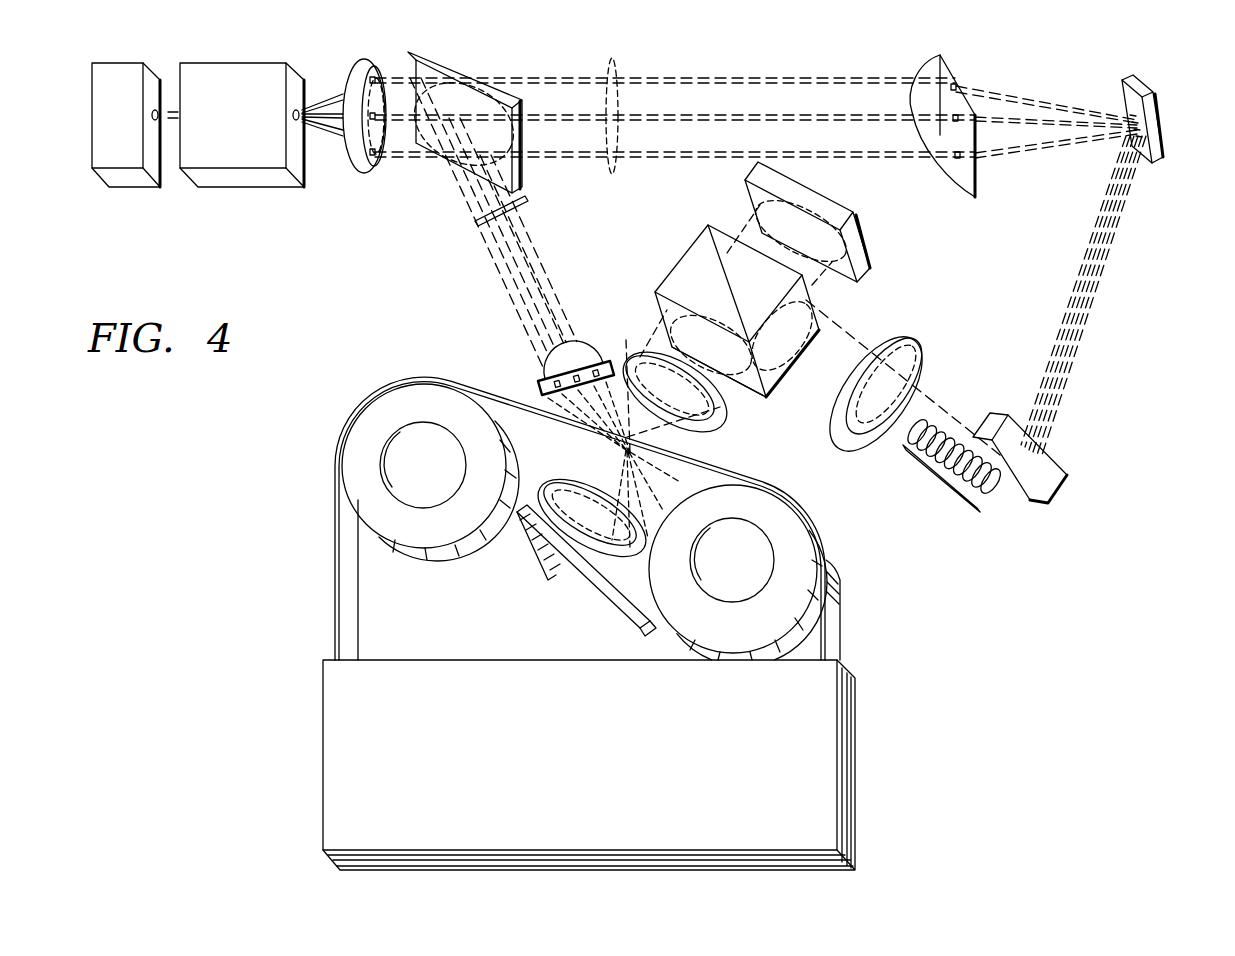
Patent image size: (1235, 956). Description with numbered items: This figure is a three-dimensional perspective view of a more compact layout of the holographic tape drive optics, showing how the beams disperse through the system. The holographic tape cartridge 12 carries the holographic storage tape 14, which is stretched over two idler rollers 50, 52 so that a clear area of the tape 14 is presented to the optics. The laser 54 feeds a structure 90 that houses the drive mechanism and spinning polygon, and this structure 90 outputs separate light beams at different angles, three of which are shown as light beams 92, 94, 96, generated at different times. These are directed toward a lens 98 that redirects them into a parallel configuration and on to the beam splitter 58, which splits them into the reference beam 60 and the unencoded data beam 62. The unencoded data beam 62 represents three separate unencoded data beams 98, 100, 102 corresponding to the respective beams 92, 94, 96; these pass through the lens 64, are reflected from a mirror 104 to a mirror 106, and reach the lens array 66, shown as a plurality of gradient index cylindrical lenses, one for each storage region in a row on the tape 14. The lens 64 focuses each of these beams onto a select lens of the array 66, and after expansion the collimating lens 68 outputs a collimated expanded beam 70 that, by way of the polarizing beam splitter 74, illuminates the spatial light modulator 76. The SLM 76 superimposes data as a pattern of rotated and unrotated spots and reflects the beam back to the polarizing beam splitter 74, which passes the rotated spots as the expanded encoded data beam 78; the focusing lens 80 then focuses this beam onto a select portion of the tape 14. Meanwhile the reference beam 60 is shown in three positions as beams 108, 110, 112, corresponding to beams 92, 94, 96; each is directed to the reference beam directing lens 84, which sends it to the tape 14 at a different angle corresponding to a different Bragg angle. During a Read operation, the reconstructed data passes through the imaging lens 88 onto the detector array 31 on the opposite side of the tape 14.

The holographic tape cartridge 12 is at (853, 773).
The holographic storage tape 14 is at (347, 613).
The detector array 31 is at (572, 583).
The idler roller 50 is at (370, 420).
The idler roller 52 is at (800, 537).
The laser 54 is at (132, 182).
The beam splitter 58 is at (455, 68).
The reference beam 60 is at (476, 222).
The unencoded data beam 62 is at (612, 60).
The reference deflection removing lens 64 is at (975, 170).
The lens array 66 is at (940, 470).
The collimating lens 68 is at (918, 356).
The expanded beam 70 is at (857, 330).
The polarizing beam splitter 74 is at (688, 265).
The spatial light modulator 76 is at (862, 228).
The expanded encoded data beam 78 is at (737, 388).
The focusing lens 80 is at (728, 414).
The reference beam directing lens 84 is at (590, 357).
The imaging lens 88 is at (552, 485).
The structure 90 is at (248, 180).
The light beam 92 is at (330, 96).
The light beam 94 is at (325, 100).
The light beam 96 is at (322, 140).
The lens 98 is at (370, 60).
The unencoded data beam 100 is at (742, 116).
The unencoded data beam 102 is at (667, 160).
The mirror 104 is at (1168, 155).
The mirror 106 is at (1063, 490).
The reference beam position 108 is at (487, 252).
The reference beam position 110 is at (527, 235).
The reference beam position 112 is at (555, 272).